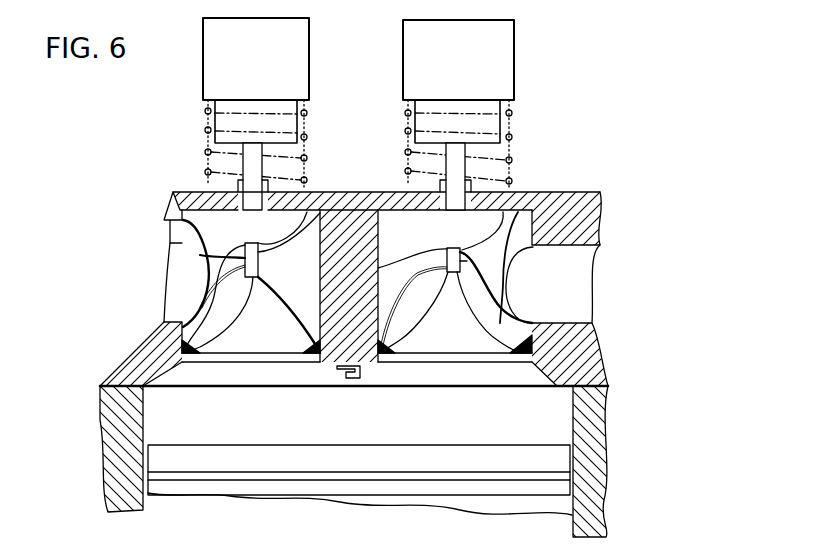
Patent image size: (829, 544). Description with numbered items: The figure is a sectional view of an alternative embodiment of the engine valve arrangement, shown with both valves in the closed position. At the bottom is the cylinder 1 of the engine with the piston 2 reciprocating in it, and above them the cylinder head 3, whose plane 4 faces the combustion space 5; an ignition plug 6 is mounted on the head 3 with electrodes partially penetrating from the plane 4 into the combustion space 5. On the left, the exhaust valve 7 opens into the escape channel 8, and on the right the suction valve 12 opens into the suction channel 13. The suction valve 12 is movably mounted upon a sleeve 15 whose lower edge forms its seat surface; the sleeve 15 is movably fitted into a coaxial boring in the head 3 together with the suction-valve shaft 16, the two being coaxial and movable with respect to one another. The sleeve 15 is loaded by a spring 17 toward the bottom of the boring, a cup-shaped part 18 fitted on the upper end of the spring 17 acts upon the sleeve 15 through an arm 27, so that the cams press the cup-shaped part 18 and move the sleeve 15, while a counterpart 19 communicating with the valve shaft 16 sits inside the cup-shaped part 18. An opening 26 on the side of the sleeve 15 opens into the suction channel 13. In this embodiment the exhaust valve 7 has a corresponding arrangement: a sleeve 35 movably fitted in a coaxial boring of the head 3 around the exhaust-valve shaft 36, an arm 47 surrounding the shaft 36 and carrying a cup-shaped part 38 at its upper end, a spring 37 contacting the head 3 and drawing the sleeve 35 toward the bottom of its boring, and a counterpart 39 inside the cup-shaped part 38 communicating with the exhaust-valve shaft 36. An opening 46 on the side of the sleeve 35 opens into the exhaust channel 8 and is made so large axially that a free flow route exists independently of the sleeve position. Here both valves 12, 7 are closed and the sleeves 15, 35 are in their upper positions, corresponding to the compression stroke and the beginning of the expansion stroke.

The cylinder 1 is at (160, 433).
The piston 2 is at (157, 465).
The cylinder head 3 is at (148, 362).
The plane of the head 4 is at (168, 388).
The combustion space 5 is at (302, 370).
The ignition plug 6 is at (346, 380).
The exhaust valve 7 is at (240, 355).
The escape channel 8 is at (180, 277).
The suction valve 12 is at (492, 355).
The suction channel 13 is at (583, 268).
The sleeve 15 is at (390, 355).
The suction-valve shaft 16 is at (520, 190).
The spring 17 is at (523, 160).
The cup-shaped part 18 is at (507, 70).
The counterpart 19 is at (492, 127).
The opening 26 is at (525, 230).
The arm 27 is at (408, 152).
The sleeve 35 is at (190, 192).
The exhaust-valve shaft 36 is at (327, 193).
The spring 37 is at (207, 153).
The cup-shaped part 38 is at (208, 58).
The counterpart 39 is at (222, 117).
The opening 46 is at (170, 230).
The arm 47 is at (257, 172).